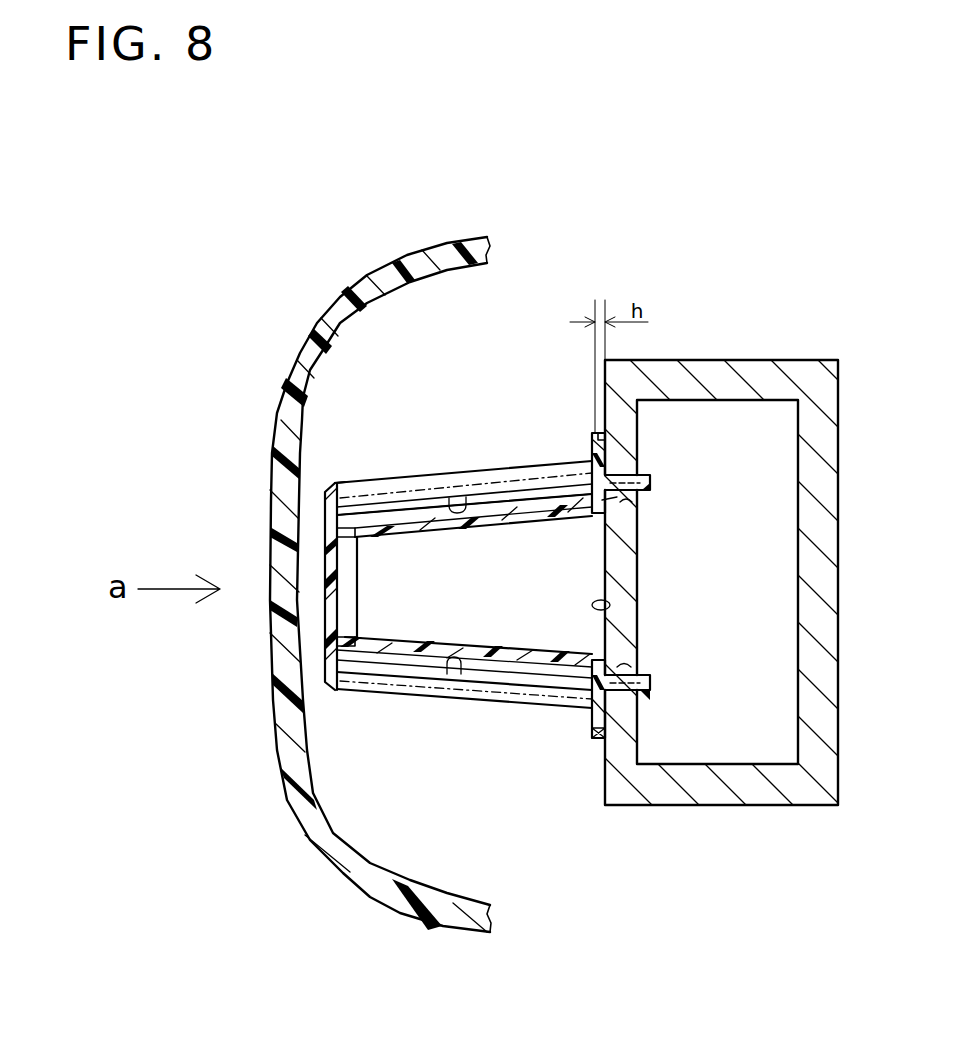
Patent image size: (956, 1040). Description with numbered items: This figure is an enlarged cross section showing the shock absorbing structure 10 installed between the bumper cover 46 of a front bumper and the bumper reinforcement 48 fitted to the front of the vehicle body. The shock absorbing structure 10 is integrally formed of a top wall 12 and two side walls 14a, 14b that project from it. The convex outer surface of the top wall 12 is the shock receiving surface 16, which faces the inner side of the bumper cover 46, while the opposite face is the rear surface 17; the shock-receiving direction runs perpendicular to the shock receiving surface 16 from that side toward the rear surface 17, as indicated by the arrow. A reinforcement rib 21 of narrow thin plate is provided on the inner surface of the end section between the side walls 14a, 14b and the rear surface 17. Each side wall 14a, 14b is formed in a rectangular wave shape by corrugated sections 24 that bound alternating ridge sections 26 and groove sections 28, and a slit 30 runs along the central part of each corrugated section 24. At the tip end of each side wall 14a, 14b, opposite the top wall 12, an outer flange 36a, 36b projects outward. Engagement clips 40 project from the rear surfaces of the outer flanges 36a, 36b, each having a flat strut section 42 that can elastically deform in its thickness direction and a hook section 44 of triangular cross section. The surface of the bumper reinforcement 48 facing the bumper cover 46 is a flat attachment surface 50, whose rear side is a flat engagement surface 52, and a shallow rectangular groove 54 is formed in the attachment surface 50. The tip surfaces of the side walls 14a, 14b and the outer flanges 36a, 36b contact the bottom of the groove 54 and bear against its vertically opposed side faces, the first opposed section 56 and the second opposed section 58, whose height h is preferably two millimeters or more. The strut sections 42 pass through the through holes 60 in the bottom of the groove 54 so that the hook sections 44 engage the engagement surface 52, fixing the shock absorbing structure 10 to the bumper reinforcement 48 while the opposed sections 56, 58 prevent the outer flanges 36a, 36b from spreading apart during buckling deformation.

The shock absorbing structure 10 is at (338, 458).
The top wall 12 is at (316, 661).
The side wall 14a is at (498, 679).
The side wall 14b is at (509, 493).
The shock receiving surface 16 is at (303, 568).
The rear surface 17 is at (338, 608).
The reinforcement rib 21 is at (356, 567).
The corrugated section 24 is at (408, 497).
The ridge section 26 is at (441, 470).
The groove section 28 is at (548, 515).
The slit 30 is at (467, 496).
The outer flange 36a is at (592, 720).
The outer flange 36b is at (592, 447).
The engagement clip 40 is at (665, 483).
The strut section 42 is at (628, 478).
The hook section 44 is at (650, 479).
The bumper cover 46 is at (266, 504).
The bumper reinforcement 48 is at (753, 788).
The attachment surface 50 is at (598, 777).
The engagement surface 52 is at (639, 567).
The groove 54 is at (610, 598).
The first opposed section 56 is at (593, 437).
The second opposed section 58 is at (595, 720).
The through hole 60 is at (627, 499).